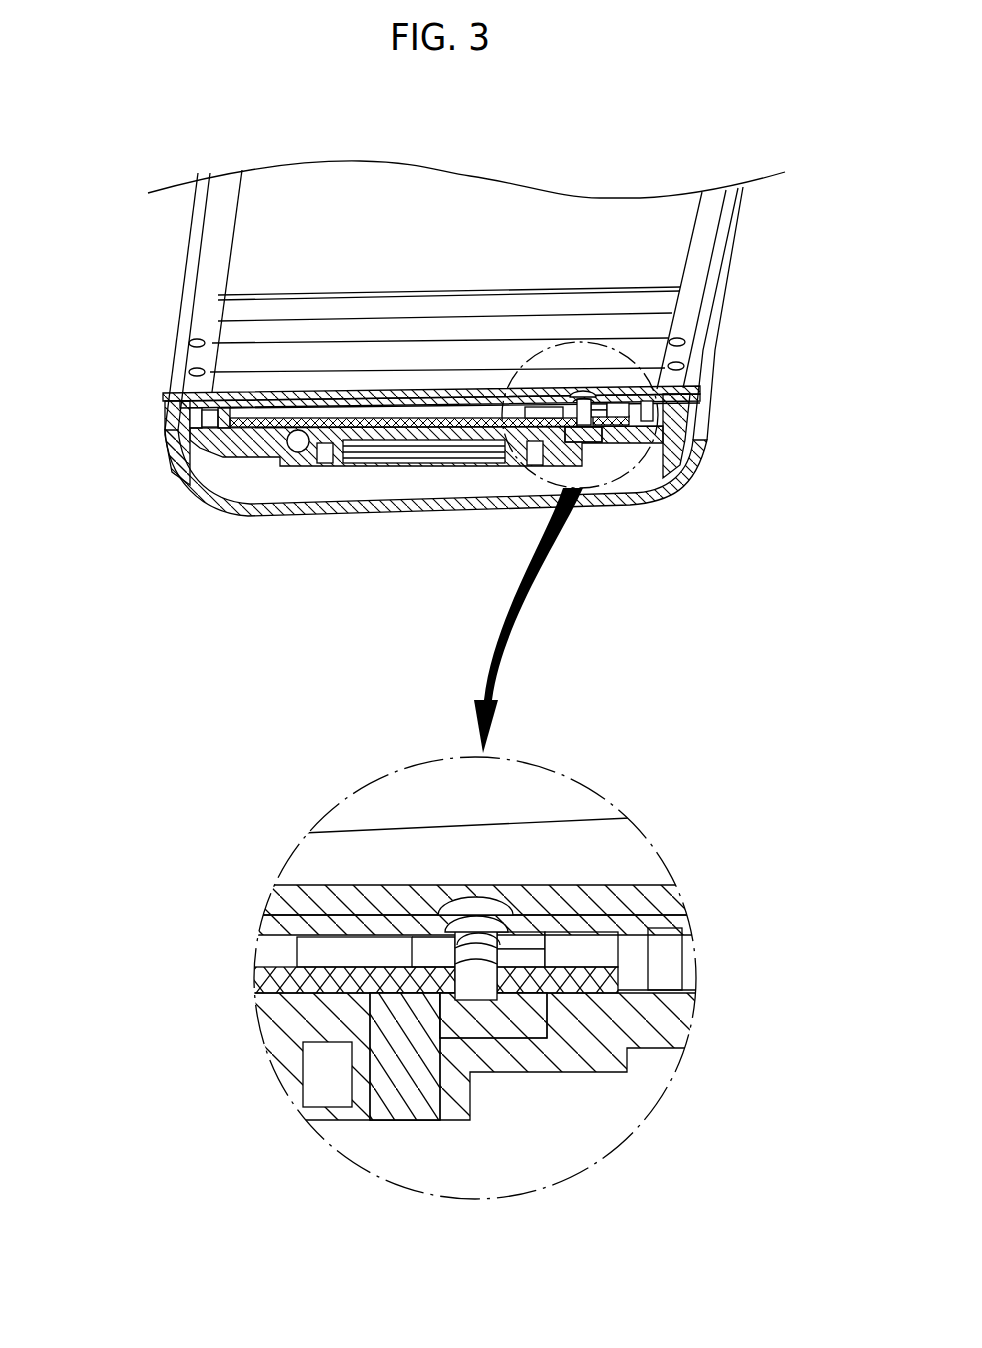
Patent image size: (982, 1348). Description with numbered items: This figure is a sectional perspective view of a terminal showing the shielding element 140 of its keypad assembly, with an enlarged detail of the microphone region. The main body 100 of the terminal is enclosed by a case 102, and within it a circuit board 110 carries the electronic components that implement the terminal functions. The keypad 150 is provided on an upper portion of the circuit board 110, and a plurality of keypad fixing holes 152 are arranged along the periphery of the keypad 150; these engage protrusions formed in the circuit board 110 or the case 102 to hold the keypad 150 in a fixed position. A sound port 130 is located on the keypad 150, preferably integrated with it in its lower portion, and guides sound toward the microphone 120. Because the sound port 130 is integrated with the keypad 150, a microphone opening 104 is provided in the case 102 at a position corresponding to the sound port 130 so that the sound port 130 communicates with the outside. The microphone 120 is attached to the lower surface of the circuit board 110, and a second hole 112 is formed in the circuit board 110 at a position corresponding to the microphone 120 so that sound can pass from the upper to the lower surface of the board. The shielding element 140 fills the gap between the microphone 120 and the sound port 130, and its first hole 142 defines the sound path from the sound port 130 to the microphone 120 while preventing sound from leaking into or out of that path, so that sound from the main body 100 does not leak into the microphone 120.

The main body 100 is at (170, 250).
The case 102 is at (277, 395).
The microphone opening 104 is at (462, 907).
The circuit board 110 is at (565, 1015).
The second hole 112 is at (478, 973).
The microphone 120 is at (518, 1010).
The sound port 130 is at (478, 930).
The shielding element 140 is at (615, 988).
The first hole 142 is at (393, 993).
The keypad 150 is at (230, 333).
The keypad fixing holes 152 is at (190, 372).